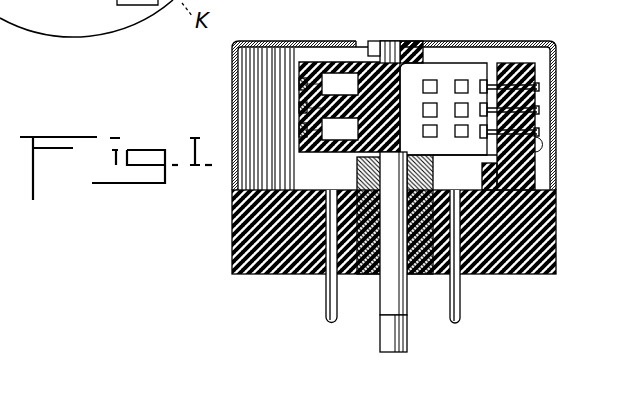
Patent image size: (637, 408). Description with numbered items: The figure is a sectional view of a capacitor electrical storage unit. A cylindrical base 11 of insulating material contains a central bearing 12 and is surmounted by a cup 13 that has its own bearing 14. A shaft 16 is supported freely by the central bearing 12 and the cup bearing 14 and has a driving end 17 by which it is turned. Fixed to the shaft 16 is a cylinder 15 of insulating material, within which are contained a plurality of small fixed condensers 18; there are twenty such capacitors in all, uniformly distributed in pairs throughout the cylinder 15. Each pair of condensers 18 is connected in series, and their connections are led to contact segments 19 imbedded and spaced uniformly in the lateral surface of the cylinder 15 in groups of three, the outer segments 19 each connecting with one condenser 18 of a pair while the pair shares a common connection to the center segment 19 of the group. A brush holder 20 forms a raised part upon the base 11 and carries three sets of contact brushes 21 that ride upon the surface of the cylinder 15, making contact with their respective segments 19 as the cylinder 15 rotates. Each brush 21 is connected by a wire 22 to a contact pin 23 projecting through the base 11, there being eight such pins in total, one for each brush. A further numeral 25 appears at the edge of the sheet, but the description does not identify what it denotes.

The base 11 is at (487, 275).
The insulating sleeve 12 is at (375, 270).
The housing 13 is at (492, 42).
The spacer 14 is at (358, 53).
The circuit board 15 is at (410, 77).
The center stem 16 is at (407, 297).
The stem end 17 is at (387, 330).
The coil core 18 is at (332, 78).
The windings / components 19 is at (297, 127).
The connector block 20 is at (534, 70).
The terminal pins 21 is at (487, 130).
The support 22 is at (507, 159).
The lead pins 23 is at (327, 293).
The lead 25 is at (388, 403).